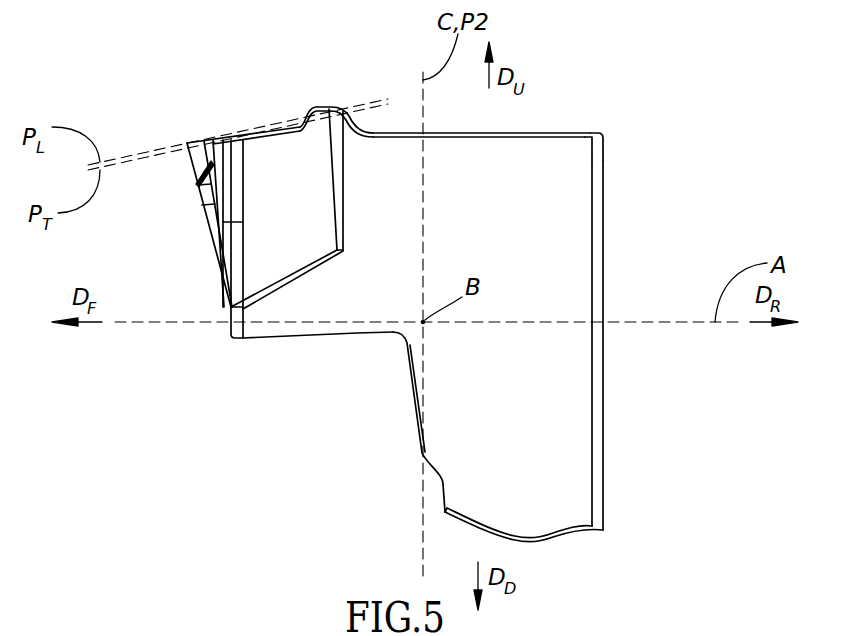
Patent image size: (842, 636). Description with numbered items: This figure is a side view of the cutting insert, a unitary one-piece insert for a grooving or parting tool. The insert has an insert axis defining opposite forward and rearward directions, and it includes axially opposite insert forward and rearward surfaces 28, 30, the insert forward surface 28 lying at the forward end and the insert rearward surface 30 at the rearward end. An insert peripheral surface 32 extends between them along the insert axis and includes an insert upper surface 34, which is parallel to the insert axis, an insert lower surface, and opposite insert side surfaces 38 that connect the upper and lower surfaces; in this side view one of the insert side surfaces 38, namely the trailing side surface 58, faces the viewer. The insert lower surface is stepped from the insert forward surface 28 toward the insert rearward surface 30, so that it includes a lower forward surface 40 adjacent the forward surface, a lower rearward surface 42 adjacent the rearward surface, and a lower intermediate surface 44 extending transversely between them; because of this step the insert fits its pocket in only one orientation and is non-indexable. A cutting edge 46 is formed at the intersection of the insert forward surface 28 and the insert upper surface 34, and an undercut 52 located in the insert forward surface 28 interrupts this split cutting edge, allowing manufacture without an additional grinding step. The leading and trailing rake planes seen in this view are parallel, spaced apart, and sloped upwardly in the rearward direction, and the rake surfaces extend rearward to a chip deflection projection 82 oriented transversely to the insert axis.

The insert forward surface 28 is at (205, 237).
The insert rearward surface 30 is at (606, 195).
The insert peripheral surface 32 is at (552, 172).
The insert upper surface 34 is at (533, 132).
The insert side surfaces 38 is at (647, 345).
The lower forward surface 40 is at (303, 340).
The lower rearward surface 42 is at (550, 540).
The lower intermediate surface 44 is at (412, 405).
The cutting edge 46 is at (197, 143).
The undercut 52 is at (195, 190).
The trailing side surface 58 is at (557, 238).
The chip deflection projection 82 is at (342, 104).